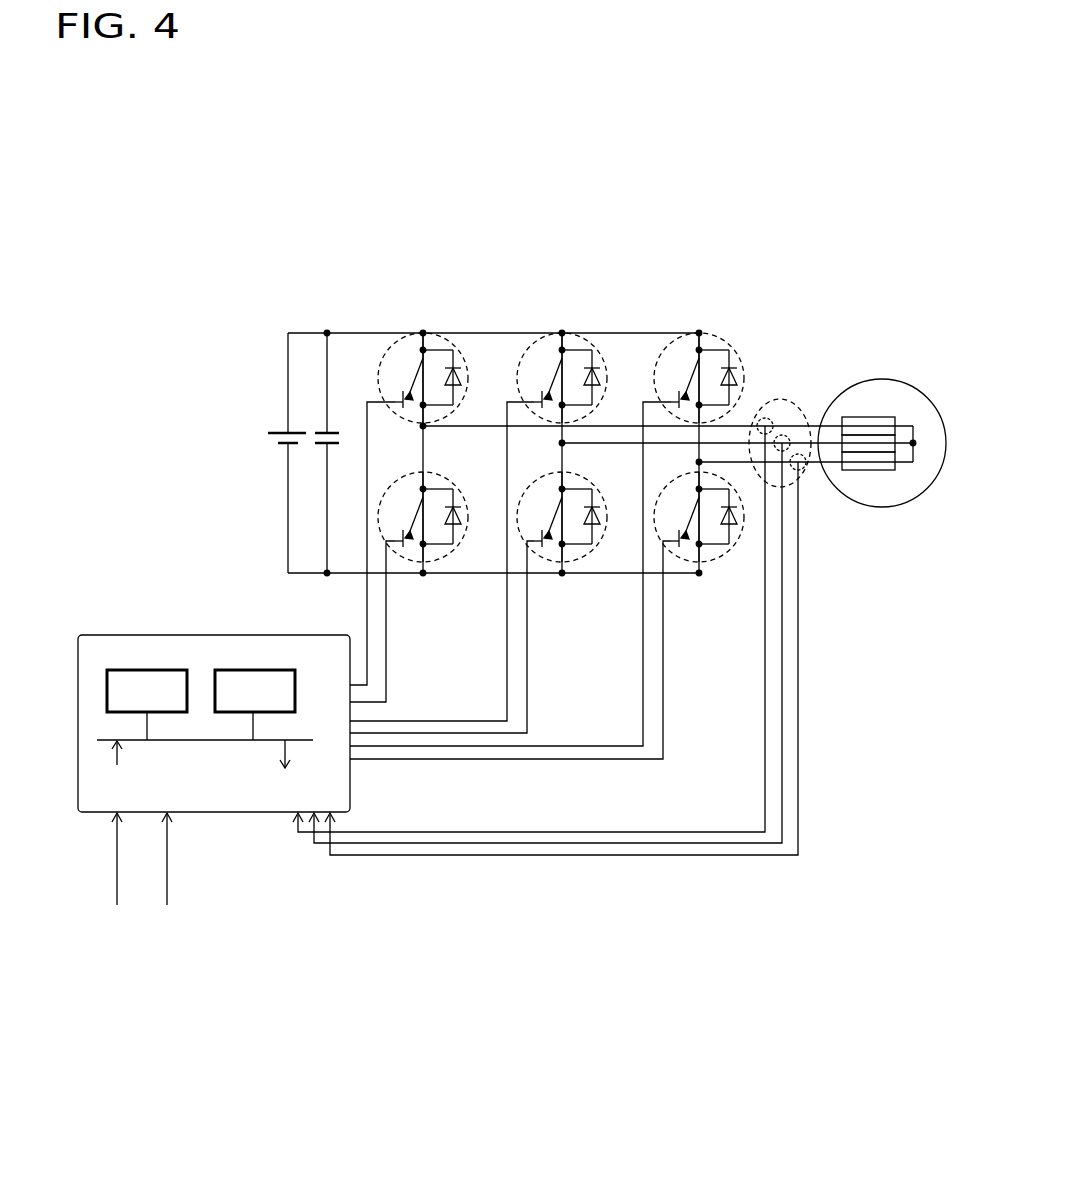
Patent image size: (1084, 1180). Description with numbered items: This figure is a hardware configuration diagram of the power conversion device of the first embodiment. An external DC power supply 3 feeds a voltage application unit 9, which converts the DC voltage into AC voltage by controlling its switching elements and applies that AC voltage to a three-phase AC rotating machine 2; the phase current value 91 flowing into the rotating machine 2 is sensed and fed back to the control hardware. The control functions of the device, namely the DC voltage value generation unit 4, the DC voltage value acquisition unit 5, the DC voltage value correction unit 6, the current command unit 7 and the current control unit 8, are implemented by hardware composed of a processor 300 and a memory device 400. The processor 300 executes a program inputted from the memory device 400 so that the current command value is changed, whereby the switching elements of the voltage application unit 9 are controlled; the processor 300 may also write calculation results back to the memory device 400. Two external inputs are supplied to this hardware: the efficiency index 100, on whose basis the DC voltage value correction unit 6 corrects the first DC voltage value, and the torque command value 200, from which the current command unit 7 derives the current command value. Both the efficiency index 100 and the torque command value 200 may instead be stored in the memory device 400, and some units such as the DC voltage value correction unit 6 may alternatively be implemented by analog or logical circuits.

The three-phase AC rotating machine 2 is at (872, 507).
The DC power supply 3 is at (279, 428).
The DC voltage value generation unit 4 is at (214, 656).
The DC voltage value acquisition unit 5 is at (214, 656).
The DC voltage value correction unit 6 is at (214, 656).
The current command unit 7 is at (214, 656).
The current control unit 8 is at (214, 656).
The voltage application unit 9 is at (362, 323).
The phase current value 91 is at (628, 832).
The efficiency index 100 is at (109, 879).
The torque command value 200 is at (169, 879).
The processor 300 is at (143, 670).
The memory device 400 is at (232, 670).